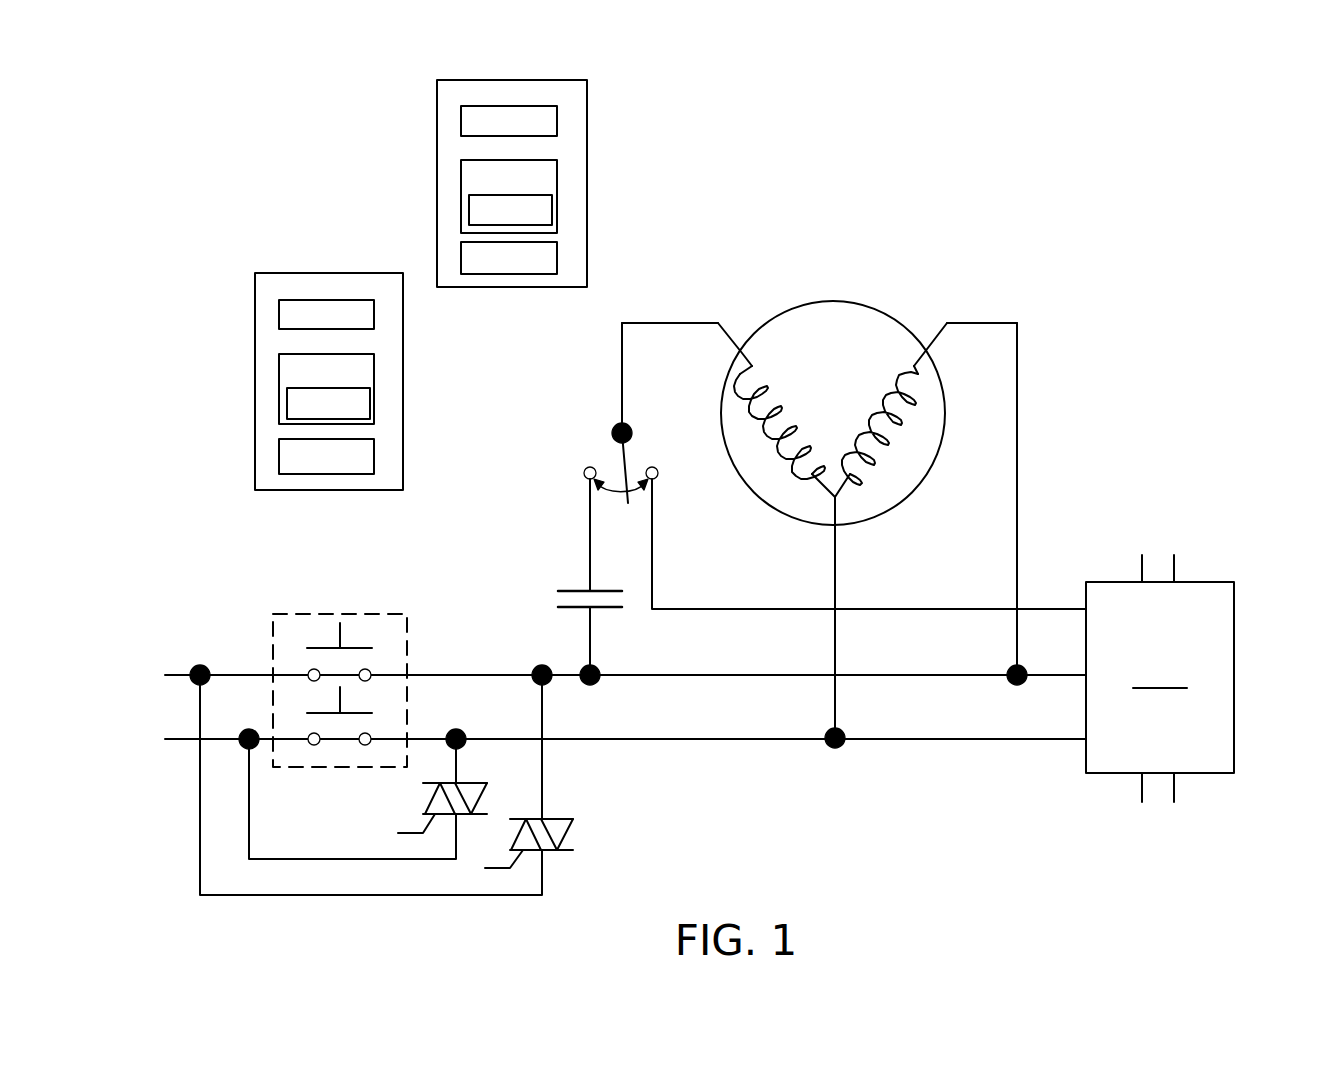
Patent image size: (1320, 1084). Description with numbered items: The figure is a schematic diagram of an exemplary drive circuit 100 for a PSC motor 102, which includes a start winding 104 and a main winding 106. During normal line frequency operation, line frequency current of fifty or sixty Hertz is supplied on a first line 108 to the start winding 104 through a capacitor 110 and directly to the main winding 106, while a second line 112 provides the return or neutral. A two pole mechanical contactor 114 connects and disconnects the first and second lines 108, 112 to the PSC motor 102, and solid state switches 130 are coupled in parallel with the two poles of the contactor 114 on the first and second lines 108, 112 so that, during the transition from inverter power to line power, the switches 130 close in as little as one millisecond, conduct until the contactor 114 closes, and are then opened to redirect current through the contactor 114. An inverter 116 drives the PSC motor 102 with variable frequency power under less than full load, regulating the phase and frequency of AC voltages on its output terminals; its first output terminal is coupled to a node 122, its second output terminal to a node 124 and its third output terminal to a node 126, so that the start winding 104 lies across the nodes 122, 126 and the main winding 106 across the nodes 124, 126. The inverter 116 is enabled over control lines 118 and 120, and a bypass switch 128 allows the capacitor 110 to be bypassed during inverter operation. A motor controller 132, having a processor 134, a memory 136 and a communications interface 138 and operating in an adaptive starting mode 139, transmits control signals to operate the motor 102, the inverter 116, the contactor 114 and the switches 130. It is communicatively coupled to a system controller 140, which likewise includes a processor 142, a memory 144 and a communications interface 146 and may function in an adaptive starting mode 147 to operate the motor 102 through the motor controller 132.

The drive circuit 100 is at (1068, 237).
The PSC motor 102 is at (803, 302).
The start winding 104 is at (738, 378).
The main winding 106 is at (920, 378).
The first line (L1) 108 is at (180, 670).
The capacitor 110 is at (558, 591).
The second line (L2) 112 is at (178, 741).
The contactor 114 is at (315, 614).
The inverter 116 is at (1160, 677).
The control line (Y1) 118 is at (1142, 567).
The control line (Y2) 120 is at (1174, 567).
The node 122 is at (1040, 605).
The node 124 is at (1013, 683).
The node 126 is at (830, 748).
The bypass switch 128 is at (598, 453).
The solid state switches 130 is at (425, 798).
The motor controller 132 is at (483, 80).
The processor 134 is at (557, 120).
The memory 136 is at (557, 173).
The communications interface 138 is at (557, 257).
The adaptive starting mode 139 is at (552, 212).
The system controller 140 is at (302, 273).
The processor 142 is at (279, 311).
The memory 144 is at (279, 365).
The communications interface 146 is at (279, 457).
The adaptive starting mode 147 is at (287, 400).